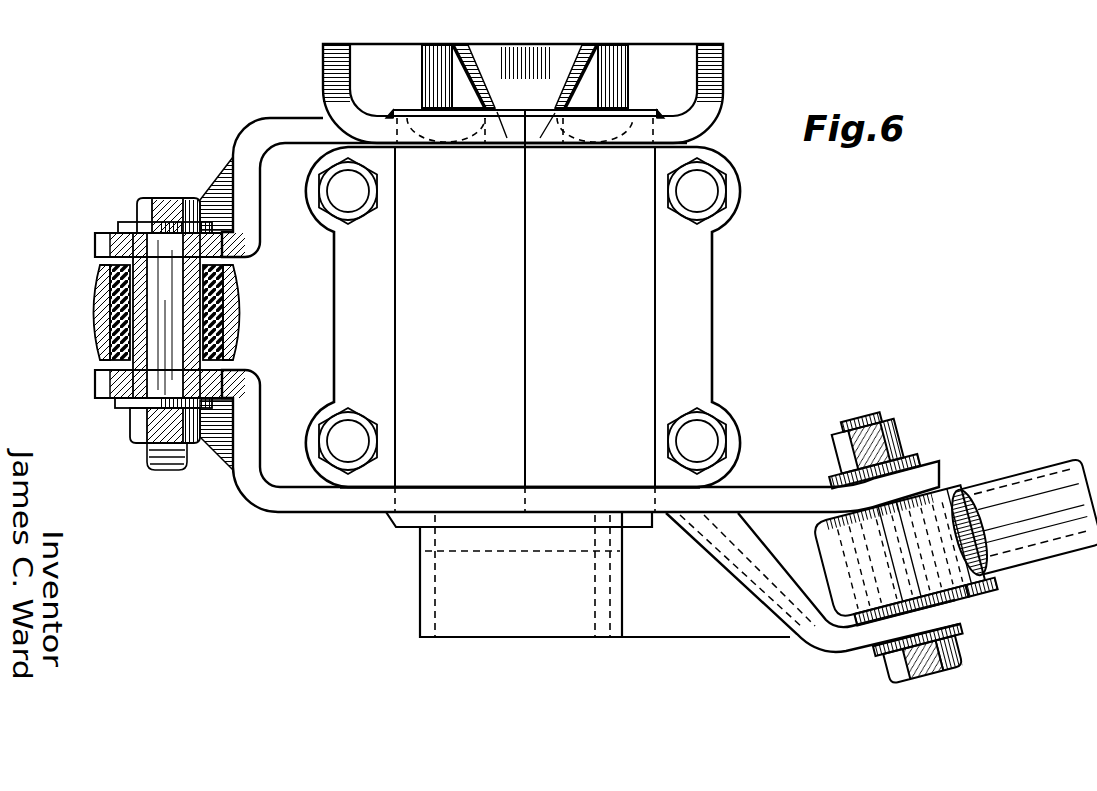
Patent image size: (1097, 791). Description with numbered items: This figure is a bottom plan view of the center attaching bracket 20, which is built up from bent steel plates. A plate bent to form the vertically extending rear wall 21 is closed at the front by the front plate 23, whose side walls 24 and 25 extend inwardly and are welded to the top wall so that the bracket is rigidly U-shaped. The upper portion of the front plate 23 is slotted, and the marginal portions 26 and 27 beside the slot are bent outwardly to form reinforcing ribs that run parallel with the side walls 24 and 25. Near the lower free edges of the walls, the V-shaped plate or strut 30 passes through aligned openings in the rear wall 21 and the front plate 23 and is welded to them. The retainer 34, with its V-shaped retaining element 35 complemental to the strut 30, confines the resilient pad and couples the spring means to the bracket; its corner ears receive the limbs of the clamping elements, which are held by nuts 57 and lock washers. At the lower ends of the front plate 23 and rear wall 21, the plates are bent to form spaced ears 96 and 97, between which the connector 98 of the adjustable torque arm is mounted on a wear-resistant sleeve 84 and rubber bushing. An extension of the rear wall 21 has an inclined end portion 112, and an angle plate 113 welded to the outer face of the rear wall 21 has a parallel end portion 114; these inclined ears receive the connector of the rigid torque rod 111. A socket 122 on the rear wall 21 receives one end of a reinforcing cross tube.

The center bracket 20 is at (357, 518).
The rear wall 21 is at (438, 492).
The front plate 23 is at (736, 92).
The side wall 24 is at (724, 60).
The side wall 25 is at (322, 56).
The marginal portion 26 is at (618, 66).
The marginal portion 27 is at (422, 56).
The plate or strut 30 is at (410, 522).
The retainer 34 is at (700, 323).
The retaining element 35 is at (582, 315).
The nuts 57 is at (716, 212).
The sleeve 84 is at (243, 263).
The ear 96 is at (97, 232).
The ear 97 is at (96, 383).
The connector 98 is at (243, 300).
The rigid torque rod 111 is at (1038, 470).
The end portion 112 is at (945, 462).
The angle plate 113 is at (815, 648).
The end portion 114 is at (1000, 608).
The socket 122 is at (458, 622).